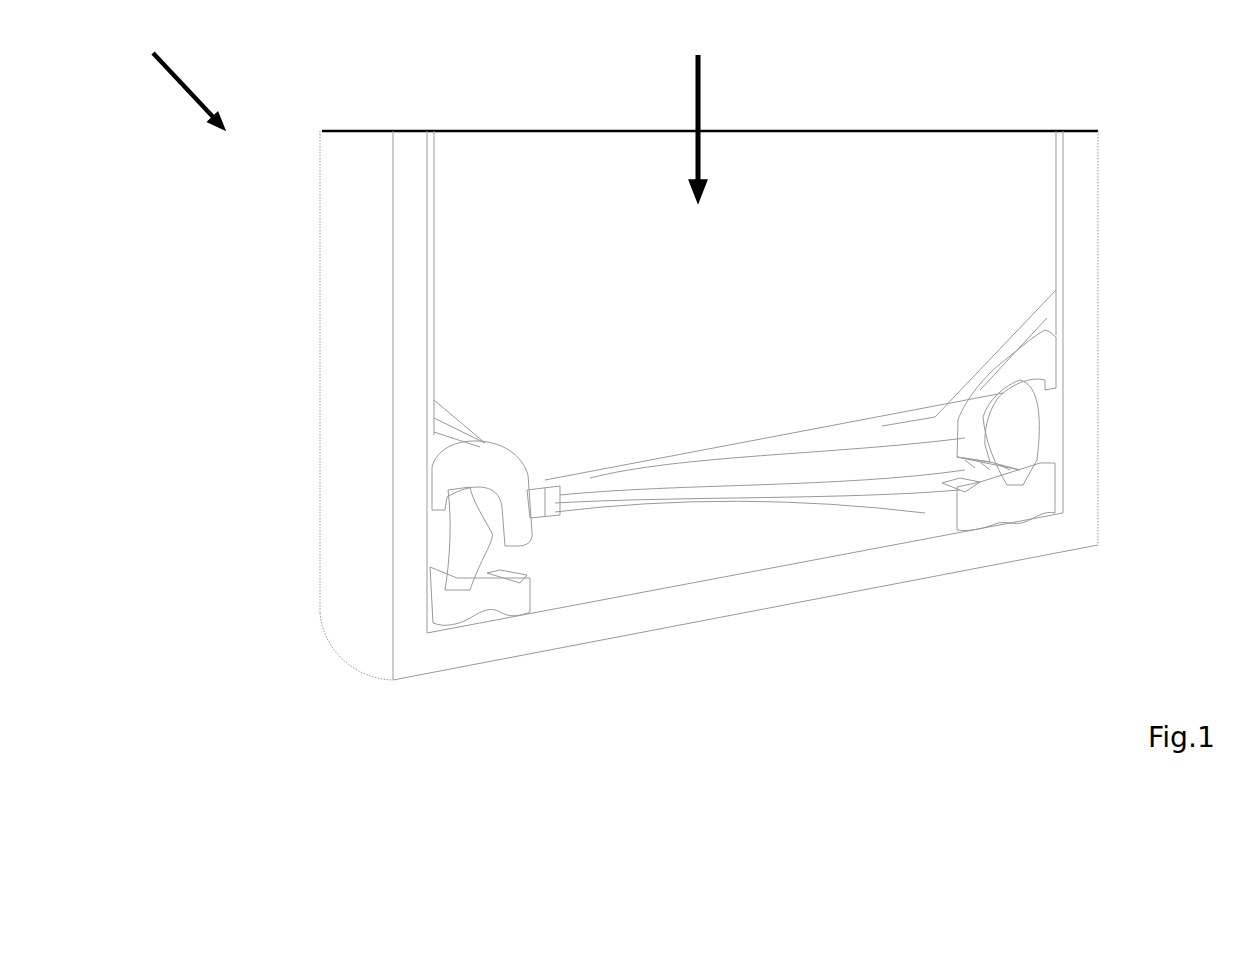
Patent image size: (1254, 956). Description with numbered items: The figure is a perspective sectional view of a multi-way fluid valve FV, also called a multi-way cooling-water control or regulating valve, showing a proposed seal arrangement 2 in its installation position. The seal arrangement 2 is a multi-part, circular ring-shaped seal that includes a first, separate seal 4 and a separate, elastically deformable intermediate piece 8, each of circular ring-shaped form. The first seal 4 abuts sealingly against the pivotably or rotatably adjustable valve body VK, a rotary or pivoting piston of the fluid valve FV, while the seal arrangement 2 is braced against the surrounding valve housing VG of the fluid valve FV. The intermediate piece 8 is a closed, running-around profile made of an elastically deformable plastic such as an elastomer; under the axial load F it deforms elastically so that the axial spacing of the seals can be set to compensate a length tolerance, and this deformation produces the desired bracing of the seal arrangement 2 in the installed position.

The seal arrangement 2 is at (708, 472).
The first seal 4 is at (1040, 362).
The intermediate piece 8 is at (1025, 435).
The valve body VK is at (840, 201).
The valve housing VG is at (1083, 238).
The axial load F is at (682, 121).
The multi-way fluid valve FV is at (161, 84).